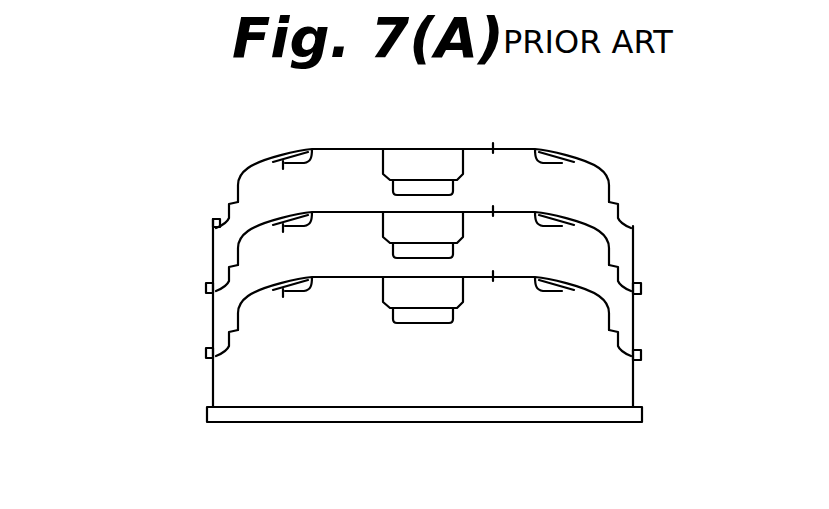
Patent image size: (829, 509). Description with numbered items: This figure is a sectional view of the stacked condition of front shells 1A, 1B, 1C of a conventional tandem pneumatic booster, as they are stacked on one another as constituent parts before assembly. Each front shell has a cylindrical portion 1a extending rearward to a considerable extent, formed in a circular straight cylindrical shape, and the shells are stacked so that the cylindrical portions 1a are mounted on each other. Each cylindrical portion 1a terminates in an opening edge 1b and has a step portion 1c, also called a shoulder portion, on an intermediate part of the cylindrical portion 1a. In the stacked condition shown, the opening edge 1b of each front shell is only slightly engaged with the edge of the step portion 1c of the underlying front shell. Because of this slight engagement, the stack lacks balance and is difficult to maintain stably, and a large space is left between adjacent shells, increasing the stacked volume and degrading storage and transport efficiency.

The front shell 1A is at (634, 309).
The front shell 1B is at (633, 234).
The front shell 1C is at (628, 170).
The cylindrical portion 1a is at (212, 307).
The opening edge 1b is at (209, 357).
The step portion 1c is at (230, 278).